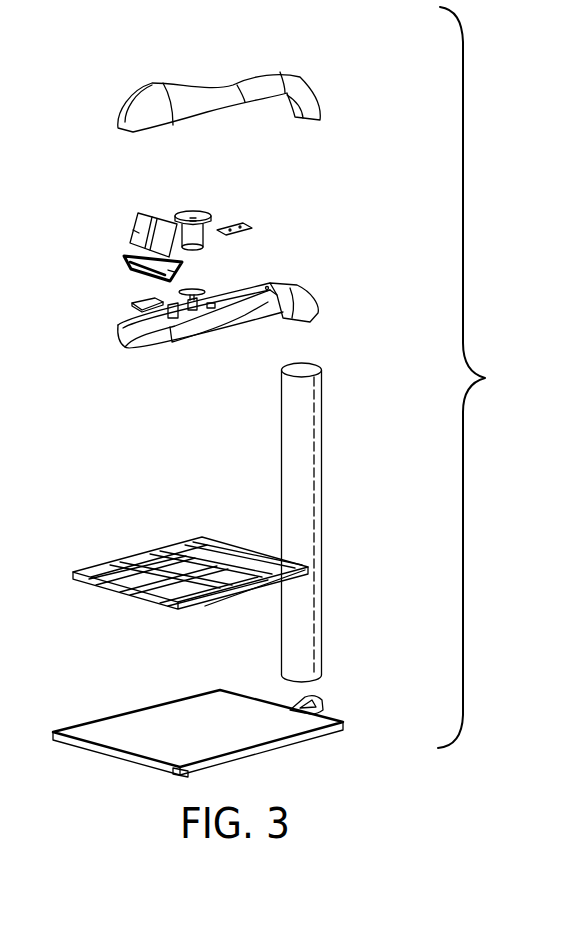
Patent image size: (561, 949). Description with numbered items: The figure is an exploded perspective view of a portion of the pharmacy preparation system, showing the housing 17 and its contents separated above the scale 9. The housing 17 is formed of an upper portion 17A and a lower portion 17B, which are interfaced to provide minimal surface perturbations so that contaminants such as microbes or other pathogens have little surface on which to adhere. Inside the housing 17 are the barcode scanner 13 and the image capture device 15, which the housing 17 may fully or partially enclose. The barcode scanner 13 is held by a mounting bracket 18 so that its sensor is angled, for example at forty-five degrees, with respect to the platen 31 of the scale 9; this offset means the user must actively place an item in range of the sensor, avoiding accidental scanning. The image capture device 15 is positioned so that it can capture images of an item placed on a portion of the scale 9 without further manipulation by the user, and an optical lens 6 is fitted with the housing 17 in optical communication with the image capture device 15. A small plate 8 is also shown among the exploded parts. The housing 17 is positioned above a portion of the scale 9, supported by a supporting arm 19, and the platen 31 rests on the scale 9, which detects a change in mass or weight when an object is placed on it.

The housing 17 is at (334, 74).
The upper portion 17A is at (135, 113).
The lower portion 17B is at (137, 340).
The barcode scanner 13 is at (141, 232).
The mounting bracket 18 is at (140, 258).
The image capture device 15 is at (202, 237).
The cover plate 8 is at (130, 303).
The optical lens 6 is at (198, 308).
The supporting arm 19 is at (334, 499).
The platen 31 is at (140, 560).
The scale 9 is at (172, 727).